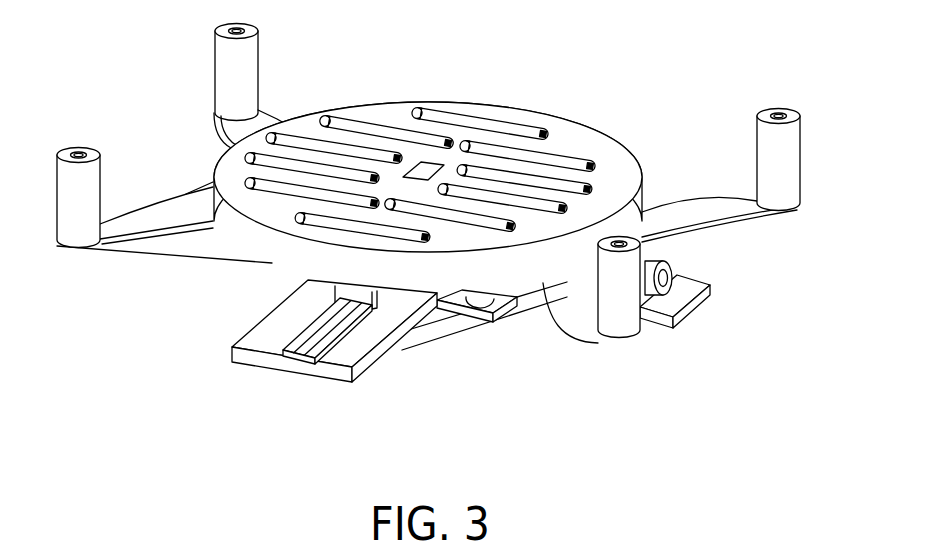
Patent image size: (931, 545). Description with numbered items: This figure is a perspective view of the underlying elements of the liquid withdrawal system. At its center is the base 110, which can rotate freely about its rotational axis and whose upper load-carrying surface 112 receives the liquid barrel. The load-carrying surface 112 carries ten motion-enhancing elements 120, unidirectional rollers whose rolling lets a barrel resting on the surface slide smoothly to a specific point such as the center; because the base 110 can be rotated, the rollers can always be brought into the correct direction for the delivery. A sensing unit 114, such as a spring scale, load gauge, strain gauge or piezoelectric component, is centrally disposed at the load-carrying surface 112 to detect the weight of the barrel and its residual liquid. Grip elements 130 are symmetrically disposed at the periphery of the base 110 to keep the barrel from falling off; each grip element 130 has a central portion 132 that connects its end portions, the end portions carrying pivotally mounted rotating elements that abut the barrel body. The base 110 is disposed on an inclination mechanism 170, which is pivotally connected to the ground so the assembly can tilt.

The base 110 is at (255, 233).
The load-carrying surface 112 is at (369, 95).
The sensing unit 114 is at (432, 167).
The motion-enhancing element 120 is at (548, 158).
The grip element 130 is at (146, 66).
The central portion 132 is at (652, 237).
The inclination mechanism 170 is at (378, 327).